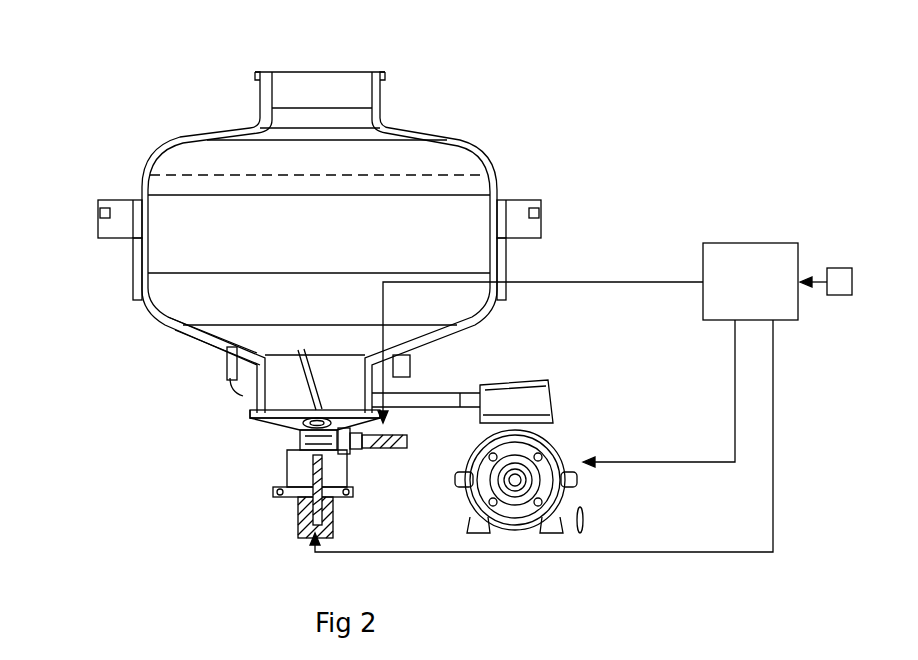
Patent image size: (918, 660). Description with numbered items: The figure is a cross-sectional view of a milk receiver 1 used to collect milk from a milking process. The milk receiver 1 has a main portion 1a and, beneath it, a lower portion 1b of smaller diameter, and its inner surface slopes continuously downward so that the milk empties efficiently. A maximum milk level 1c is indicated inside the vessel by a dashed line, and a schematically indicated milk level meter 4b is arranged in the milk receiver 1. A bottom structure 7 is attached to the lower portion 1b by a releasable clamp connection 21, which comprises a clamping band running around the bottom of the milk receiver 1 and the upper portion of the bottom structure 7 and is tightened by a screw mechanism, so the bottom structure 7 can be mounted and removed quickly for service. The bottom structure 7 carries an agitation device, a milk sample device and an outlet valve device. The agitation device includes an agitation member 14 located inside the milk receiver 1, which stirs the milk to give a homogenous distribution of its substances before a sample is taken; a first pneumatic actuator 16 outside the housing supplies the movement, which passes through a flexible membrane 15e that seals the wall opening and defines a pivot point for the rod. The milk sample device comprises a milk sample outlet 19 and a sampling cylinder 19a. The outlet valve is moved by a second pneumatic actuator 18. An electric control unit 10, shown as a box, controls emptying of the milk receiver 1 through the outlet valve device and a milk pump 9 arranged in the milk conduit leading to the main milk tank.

The milk receiver 1 is at (202, 162).
The main portion 1a is at (267, 238).
The lower portion 1b is at (283, 383).
The maximum milk level 1c is at (385, 175).
The milk level meter 4b is at (842, 270).
The bottom structure 7 is at (222, 391).
The milk pump 9 is at (555, 460).
The electric control unit 10 is at (737, 262).
The agitation member 14 is at (298, 348).
The flexible membrane 15e is at (318, 416).
The first pneumatic actuator 16 is at (378, 434).
The second pneumatic actuator 18 is at (307, 525).
The milk sample outlet 19 is at (352, 453).
The sampling cylinder 19a is at (403, 443).
The releasable clamp connection 21 is at (301, 426).